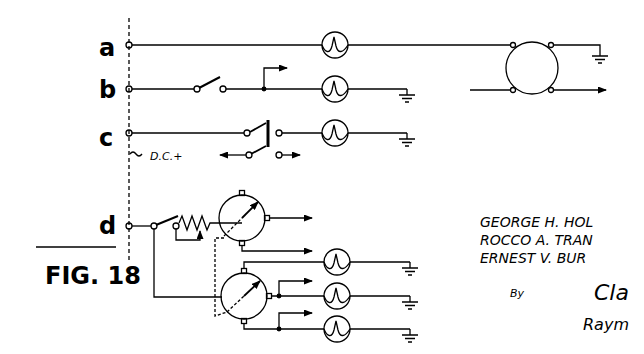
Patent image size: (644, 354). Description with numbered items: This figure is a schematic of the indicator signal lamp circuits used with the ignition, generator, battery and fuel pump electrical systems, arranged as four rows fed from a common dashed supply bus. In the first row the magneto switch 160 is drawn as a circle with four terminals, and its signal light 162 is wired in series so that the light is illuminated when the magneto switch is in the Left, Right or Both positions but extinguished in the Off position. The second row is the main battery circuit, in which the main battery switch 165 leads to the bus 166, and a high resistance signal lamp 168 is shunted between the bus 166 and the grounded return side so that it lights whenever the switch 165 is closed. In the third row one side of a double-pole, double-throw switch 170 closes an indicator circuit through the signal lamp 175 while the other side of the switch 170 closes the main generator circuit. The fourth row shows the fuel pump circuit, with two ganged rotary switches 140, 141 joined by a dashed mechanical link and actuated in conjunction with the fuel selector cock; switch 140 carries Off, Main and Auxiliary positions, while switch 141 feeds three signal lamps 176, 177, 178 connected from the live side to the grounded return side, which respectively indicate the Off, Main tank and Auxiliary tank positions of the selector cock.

The magneto switch 160 is at (531, 42).
The signal light 162 is at (345, 33).
The main battery switch 165 is at (205, 82).
The bus 166 is at (261, 77).
The high resistance signal lamp 168 is at (348, 81).
The double-pole, double-throw switch 170 is at (246, 127).
The signal lamp 175 is at (348, 126).
The fuel pump selector switch 140 is at (222, 203).
The fuel pump selector switch 141 is at (222, 318).
The signal lamp 176 is at (349, 252).
The signal lamp 177 is at (349, 287).
The signal lamp 178 is at (349, 322).